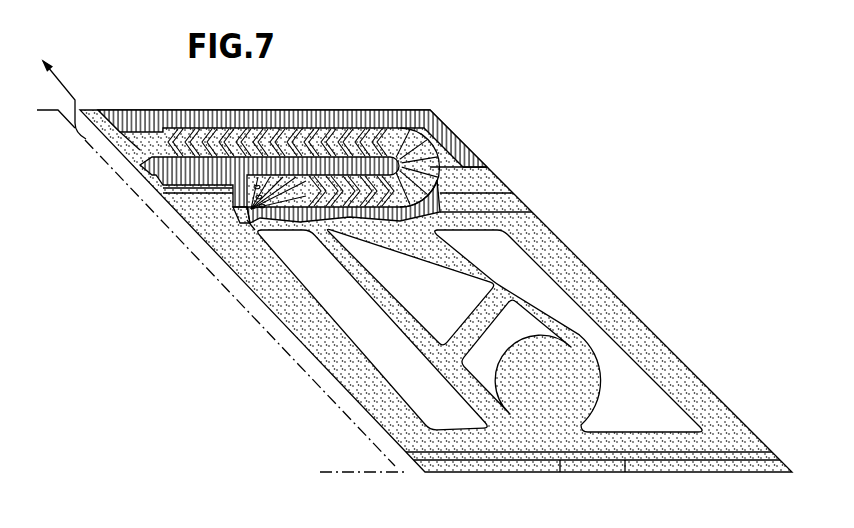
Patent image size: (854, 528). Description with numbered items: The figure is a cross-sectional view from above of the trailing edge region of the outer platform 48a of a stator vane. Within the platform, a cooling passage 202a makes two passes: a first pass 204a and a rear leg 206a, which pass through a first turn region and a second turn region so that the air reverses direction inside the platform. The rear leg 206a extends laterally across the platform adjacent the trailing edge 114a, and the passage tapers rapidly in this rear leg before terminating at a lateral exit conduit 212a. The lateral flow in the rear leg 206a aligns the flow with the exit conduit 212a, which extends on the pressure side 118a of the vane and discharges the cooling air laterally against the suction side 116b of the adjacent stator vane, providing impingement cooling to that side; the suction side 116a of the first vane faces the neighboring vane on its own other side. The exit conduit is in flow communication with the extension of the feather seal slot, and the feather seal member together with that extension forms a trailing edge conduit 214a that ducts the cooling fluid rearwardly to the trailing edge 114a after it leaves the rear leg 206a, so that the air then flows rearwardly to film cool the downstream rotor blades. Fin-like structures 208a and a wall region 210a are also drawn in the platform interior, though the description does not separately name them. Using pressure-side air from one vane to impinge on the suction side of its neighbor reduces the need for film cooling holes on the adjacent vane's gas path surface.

The outer platform of the stator vane 48a is at (538, 192).
The trailing edge 114a is at (257, 110).
The suction side 116a is at (578, 257).
The suction side of the adjacent stator vane 116b is at (165, 222).
The pressure side 118a is at (138, 167).
The passage 202a is at (490, 91).
The first pass 204a is at (412, 150).
The rear leg (second pass) 206a is at (382, 128).
The second fin array 208a is at (403, 182).
The connecting wall 210a is at (263, 214).
The exit conduit 212a is at (130, 130).
The trailing edge conduit 214a is at (95, 110).